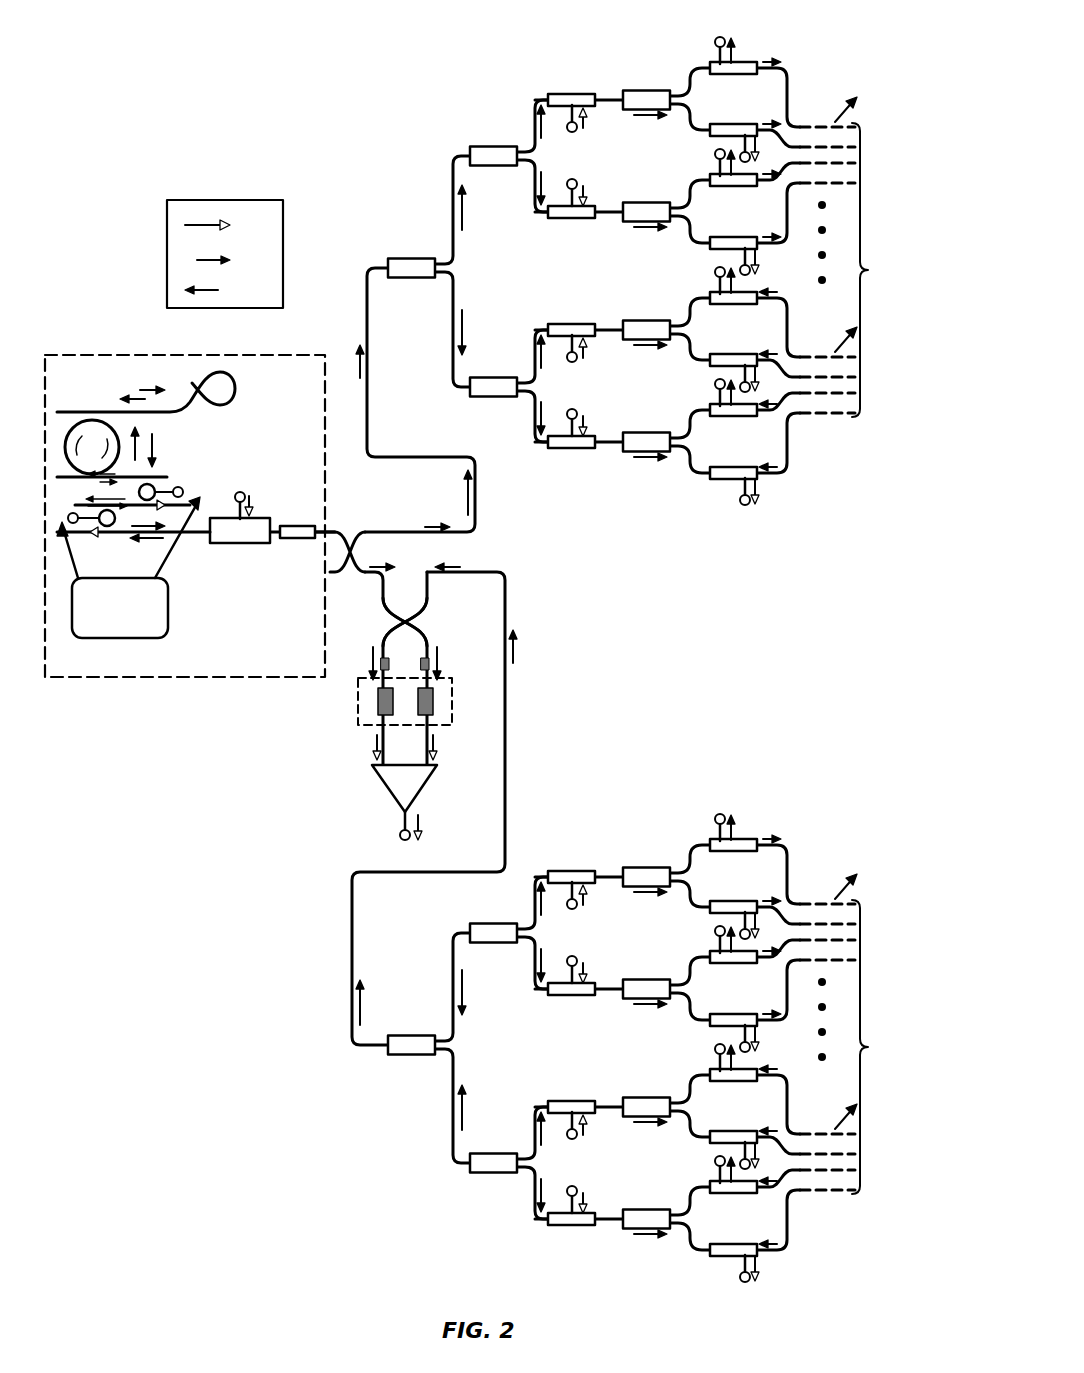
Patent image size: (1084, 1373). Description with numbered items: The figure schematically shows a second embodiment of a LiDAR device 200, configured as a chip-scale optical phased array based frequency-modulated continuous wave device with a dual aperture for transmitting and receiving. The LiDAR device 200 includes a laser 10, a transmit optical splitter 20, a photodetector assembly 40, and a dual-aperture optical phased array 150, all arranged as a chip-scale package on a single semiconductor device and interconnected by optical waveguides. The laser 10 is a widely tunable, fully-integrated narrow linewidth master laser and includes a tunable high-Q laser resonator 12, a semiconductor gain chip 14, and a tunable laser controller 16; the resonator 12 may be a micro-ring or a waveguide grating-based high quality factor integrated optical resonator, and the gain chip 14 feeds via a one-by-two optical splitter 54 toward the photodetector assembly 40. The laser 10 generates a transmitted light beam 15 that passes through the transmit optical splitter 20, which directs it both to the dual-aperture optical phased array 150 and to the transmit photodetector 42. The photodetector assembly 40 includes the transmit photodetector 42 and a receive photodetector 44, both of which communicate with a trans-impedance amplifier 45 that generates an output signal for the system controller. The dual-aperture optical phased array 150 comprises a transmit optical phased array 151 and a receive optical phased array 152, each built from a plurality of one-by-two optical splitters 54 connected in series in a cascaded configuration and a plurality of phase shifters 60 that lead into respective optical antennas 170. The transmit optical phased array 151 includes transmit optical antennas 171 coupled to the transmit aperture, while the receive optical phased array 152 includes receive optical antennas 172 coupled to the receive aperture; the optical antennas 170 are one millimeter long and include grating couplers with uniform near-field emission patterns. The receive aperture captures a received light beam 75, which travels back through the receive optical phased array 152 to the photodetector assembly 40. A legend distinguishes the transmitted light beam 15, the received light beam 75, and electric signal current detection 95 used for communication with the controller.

The laser 10 is at (310, 396).
The tunable high-Q laser resonator 12 is at (152, 448).
The semiconductor gain chip 14 is at (242, 545).
The tunable laser controller 16 is at (132, 624).
The transmit optical splitter 20 is at (420, 595).
The photodetector assembly 40 is at (412, 703).
The transmit photodetector 42 is at (378, 705).
The receive photodetector 44 is at (433, 705).
The trans-impedance amplifier 45 is at (385, 790).
The 1×2 optical splitter 54 is at (412, 258).
The phase shifter 60 is at (555, 93).
The electric signal current detection 95 is at (262, 238).
The transmitted light beam 15 is at (262, 273).
The received light beam 75 is at (262, 303).
The dual-aperture optical phased array 150 is at (685, 28).
The transmit optical phased array 151 is at (812, 58).
The receive optical phased array 152 is at (812, 1285).
The optical antennas 170 is at (915, 273).
The transmit optical antennas 171 is at (963, 273).
The receive optical antennas 172 is at (963, 1050).
The LiDAR device 200 is at (412, 192).